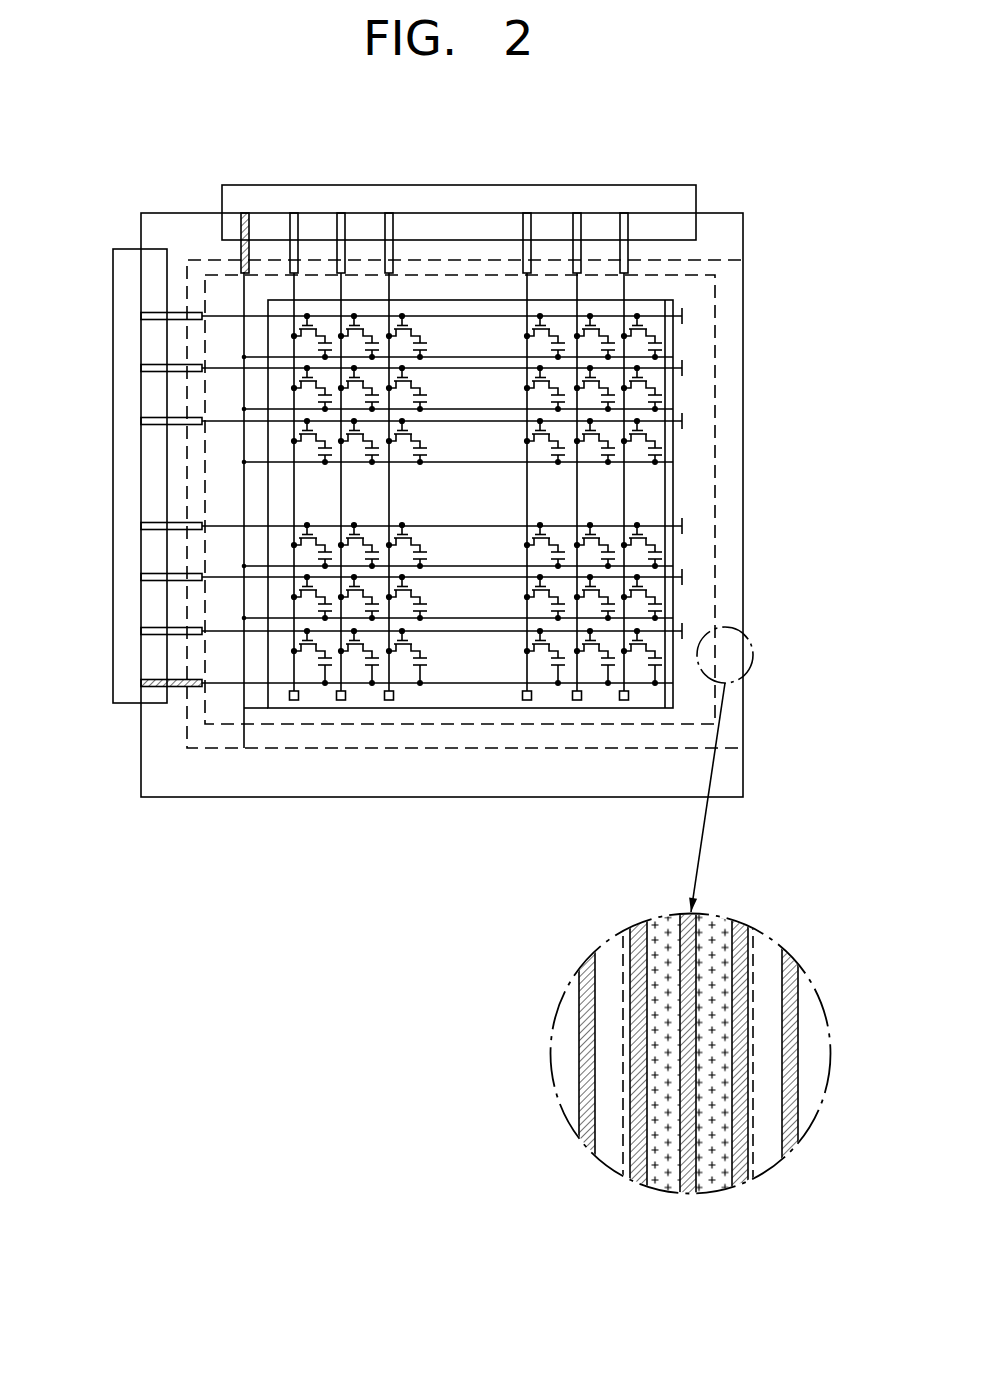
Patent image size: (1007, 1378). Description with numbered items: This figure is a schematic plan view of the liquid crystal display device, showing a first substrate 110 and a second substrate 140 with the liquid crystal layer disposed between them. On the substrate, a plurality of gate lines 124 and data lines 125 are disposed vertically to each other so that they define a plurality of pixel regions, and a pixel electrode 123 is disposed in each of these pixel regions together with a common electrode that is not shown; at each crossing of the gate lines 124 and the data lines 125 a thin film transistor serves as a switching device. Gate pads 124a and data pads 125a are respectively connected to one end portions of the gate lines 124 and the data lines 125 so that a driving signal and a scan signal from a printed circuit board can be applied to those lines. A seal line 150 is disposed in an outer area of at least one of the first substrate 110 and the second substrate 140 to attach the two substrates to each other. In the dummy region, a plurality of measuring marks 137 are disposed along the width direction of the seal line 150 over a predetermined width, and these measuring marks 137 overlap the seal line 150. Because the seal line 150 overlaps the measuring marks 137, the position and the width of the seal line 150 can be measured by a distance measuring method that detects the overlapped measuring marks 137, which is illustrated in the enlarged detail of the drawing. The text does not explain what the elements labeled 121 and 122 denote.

The first substrate 110 is at (613, 797).
The common line 121 is at (242, 490).
The storage line 122 is at (435, 357).
The pixel electrode 123 is at (654, 392).
The gate line 124 is at (471, 315).
The gate pad 124a is at (160, 423).
The data line 125 is at (528, 292).
The data pad 125a is at (628, 232).
The measuring mark 137 is at (741, 927).
The second substrate 140 is at (715, 258).
The seal line 150 is at (715, 421).